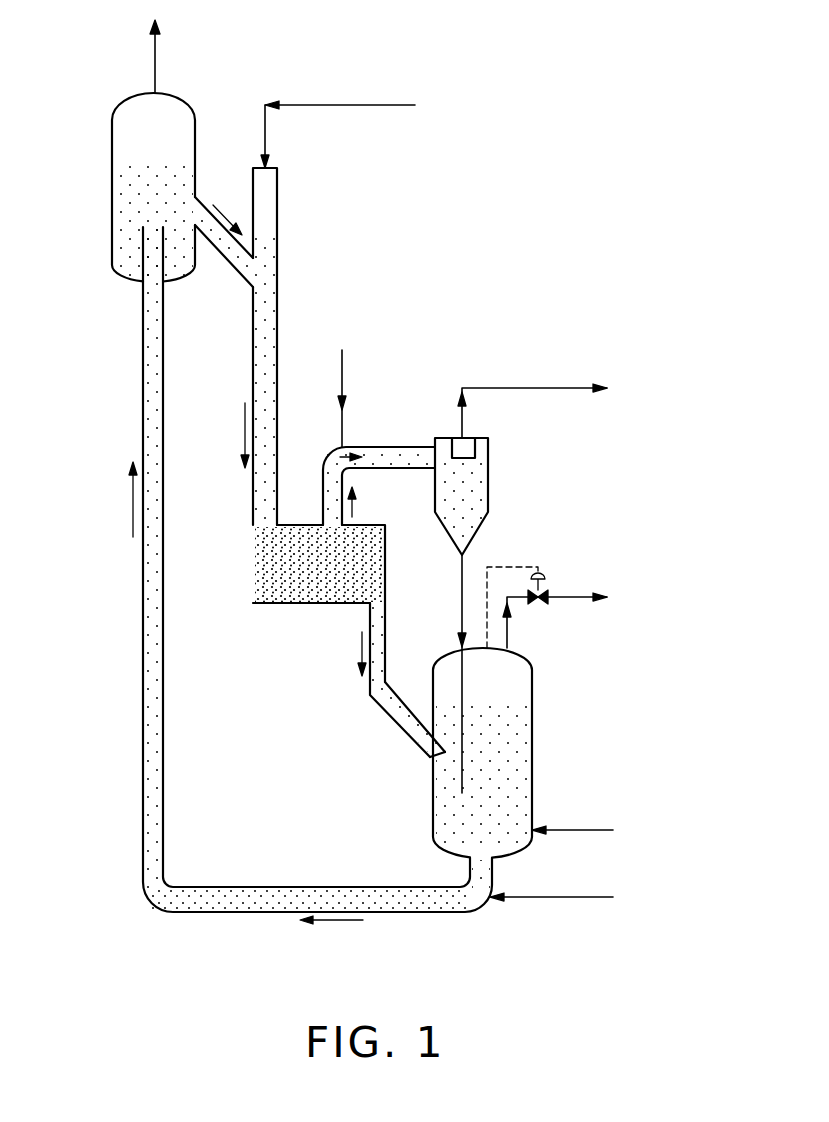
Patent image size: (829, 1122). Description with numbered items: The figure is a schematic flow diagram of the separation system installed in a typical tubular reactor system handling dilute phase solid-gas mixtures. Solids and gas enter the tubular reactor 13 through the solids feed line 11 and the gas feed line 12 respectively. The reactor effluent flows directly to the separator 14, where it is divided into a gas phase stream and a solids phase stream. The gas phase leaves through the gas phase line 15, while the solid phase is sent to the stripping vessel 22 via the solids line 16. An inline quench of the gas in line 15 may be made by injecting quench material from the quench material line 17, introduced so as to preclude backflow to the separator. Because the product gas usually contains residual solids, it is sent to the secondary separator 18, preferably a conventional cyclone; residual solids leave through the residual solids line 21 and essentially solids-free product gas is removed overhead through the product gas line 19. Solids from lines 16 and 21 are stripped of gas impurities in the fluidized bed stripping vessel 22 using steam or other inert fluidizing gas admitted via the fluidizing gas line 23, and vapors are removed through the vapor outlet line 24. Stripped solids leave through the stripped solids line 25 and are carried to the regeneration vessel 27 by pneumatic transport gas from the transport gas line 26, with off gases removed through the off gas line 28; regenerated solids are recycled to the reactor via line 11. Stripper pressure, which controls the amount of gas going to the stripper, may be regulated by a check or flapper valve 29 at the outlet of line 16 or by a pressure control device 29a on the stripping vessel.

The solids feed line 11 is at (226, 263).
The gas feed line 12 is at (365, 100).
The tubular reactor 13 is at (277, 312).
The separator 14 is at (252, 578).
The gas phase line 15 is at (322, 505).
The solids line 16 is at (402, 728).
The quench material line 17 is at (342, 388).
The secondary separator 18 is at (488, 482).
The product gas line 19 is at (530, 388).
The residual solids line 21 is at (460, 597).
The stripping vessel 22 is at (533, 715).
The fluidizing gas line 23 is at (583, 830).
The vapor outlet line 24 is at (560, 595).
The stripped solids line 25 is at (143, 758).
The transport gas line 26 is at (560, 900).
The regeneration vessel 27 is at (112, 177).
The off gas line 28 is at (152, 60).
The check valve 29 is at (430, 755).
The pressure control device 29a is at (540, 570).